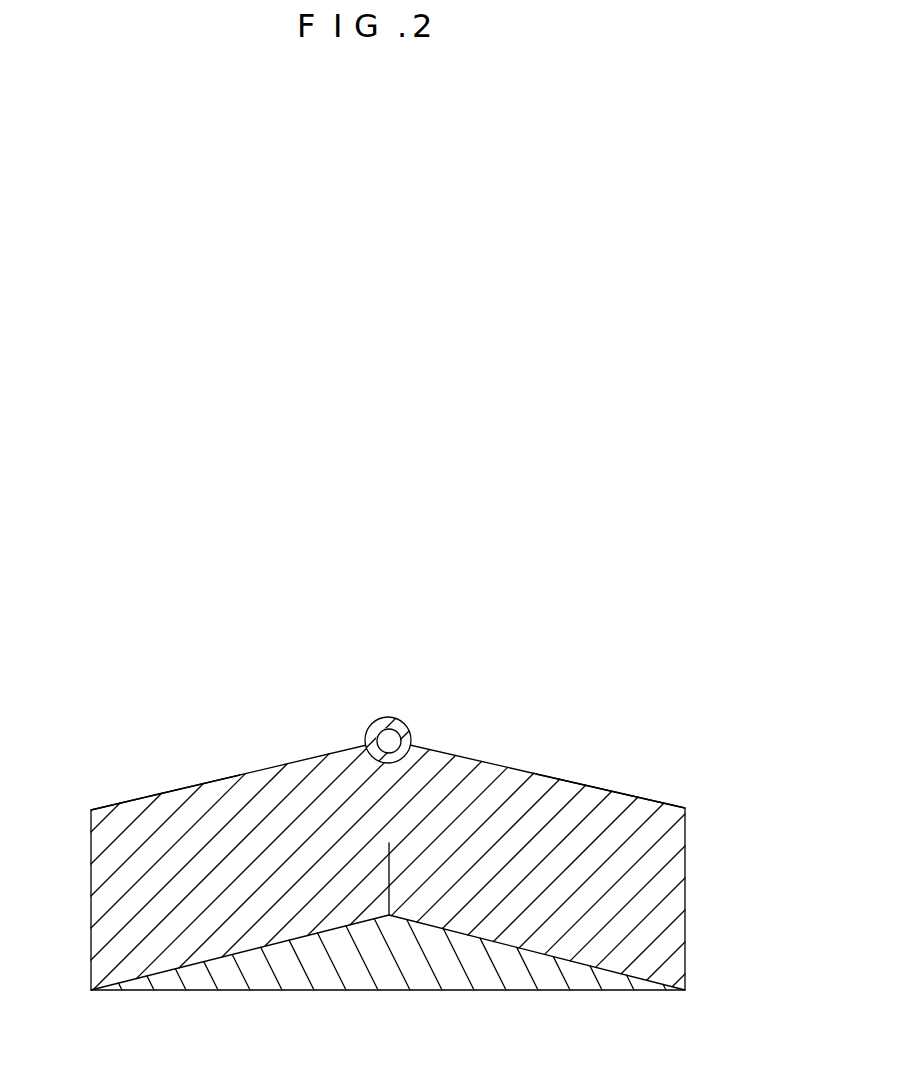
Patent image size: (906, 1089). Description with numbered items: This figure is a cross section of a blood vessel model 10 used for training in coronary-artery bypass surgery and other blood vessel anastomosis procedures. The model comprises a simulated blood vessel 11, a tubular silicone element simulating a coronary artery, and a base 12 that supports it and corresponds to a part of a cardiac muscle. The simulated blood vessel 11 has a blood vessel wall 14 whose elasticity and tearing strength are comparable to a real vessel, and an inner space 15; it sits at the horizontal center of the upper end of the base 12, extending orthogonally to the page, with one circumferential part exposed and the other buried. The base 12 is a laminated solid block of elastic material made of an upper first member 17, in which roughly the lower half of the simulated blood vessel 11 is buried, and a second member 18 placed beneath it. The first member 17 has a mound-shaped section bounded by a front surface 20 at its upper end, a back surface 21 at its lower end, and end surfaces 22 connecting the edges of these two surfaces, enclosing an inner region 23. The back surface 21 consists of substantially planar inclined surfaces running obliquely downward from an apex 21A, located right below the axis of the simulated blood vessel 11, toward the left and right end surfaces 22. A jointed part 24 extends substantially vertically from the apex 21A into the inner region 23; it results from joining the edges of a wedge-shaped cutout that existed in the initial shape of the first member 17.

The blood vessel model 10 is at (368, 607).
The simulated blood vessel 11 is at (402, 723).
The base 12 is at (617, 788).
The blood vessel wall 14 is at (366, 726).
The inner space 15 is at (412, 739).
The first member 17 is at (208, 798).
The second member 18 is at (375, 970).
The front surface 20 is at (128, 798).
The back surface 21 is at (200, 963).
The apex 21A is at (393, 912).
The end surfaces 22 is at (90, 912).
The inner region 23 is at (541, 778).
The jointed part 24 is at (388, 877).